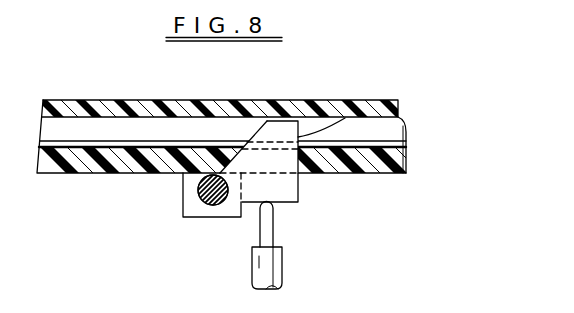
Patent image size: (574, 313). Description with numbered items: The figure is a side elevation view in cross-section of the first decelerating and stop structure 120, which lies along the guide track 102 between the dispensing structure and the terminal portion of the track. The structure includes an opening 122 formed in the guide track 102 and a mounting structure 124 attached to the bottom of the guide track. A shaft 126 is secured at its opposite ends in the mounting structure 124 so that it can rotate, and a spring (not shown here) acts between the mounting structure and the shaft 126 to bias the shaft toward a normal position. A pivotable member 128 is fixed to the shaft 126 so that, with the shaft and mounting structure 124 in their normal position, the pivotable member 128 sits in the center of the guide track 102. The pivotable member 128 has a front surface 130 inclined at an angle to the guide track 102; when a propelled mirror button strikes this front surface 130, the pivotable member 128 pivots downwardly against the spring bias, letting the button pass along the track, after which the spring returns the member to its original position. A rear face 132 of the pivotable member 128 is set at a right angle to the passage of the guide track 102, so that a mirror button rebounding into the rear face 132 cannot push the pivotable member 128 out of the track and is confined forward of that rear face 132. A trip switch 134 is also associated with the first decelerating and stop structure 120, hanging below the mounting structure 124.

The guide track 102 is at (110, 128).
The first decelerating and stop structure 120 is at (230, 158).
The opening 122 is at (320, 175).
The mounting structure 124 is at (188, 193).
The shaft 126 is at (213, 205).
The pivotable member 128 is at (277, 130).
The front surface 130 is at (248, 143).
The rear face 132 is at (350, 103).
The trip switch 134 is at (295, 275).